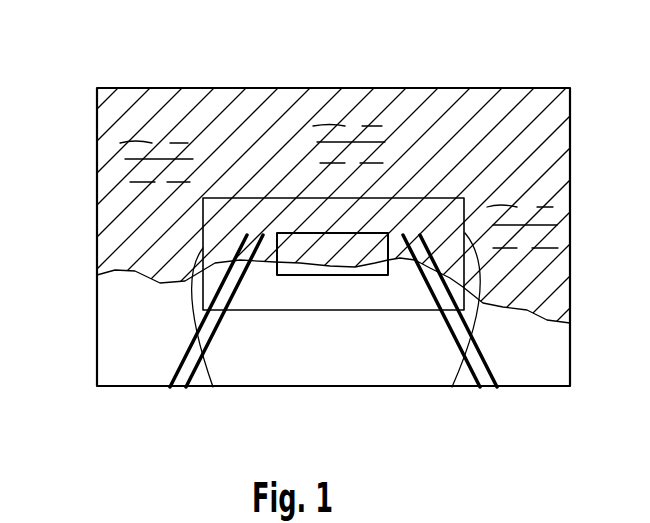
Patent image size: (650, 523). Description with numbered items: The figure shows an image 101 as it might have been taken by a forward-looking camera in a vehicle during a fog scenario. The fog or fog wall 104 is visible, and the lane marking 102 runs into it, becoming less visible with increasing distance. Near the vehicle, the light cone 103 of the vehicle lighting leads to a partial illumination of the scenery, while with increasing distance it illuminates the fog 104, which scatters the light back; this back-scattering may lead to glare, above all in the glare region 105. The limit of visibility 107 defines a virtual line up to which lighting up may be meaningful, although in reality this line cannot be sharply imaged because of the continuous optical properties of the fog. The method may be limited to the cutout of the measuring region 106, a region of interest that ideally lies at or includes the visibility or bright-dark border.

The image 101 is at (333, 197).
The lane marking 102 is at (335, 351).
The light cone 103 is at (329, 310).
The fog wall 104 is at (325, 244).
The glare region 105 is at (411, 234).
The measuring region 106 is at (327, 159).
The limit of visibility 107 is at (510, 301).